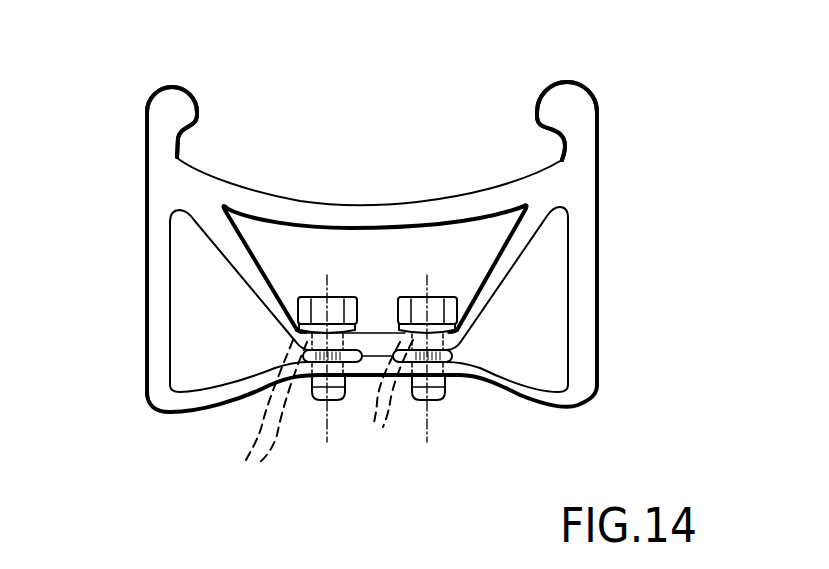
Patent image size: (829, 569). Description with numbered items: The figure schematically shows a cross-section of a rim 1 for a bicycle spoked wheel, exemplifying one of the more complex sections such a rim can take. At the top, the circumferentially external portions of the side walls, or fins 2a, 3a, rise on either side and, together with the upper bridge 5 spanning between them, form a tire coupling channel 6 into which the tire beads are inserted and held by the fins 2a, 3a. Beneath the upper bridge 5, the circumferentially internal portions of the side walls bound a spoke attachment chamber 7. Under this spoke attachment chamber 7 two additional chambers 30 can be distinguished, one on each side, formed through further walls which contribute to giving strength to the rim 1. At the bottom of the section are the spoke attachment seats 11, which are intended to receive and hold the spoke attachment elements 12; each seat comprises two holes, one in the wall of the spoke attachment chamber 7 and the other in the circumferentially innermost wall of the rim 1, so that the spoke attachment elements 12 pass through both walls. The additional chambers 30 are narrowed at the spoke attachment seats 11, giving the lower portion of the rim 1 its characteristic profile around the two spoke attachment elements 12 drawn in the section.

The rim 1 is at (708, 115).
The fin 2a is at (170, 108).
The fin 3a is at (567, 98).
The upper bridge 5 is at (478, 200).
The tire coupling channel 6 is at (380, 153).
The spoke attachment chamber 7 is at (302, 247).
The additional chambers 30 is at (203, 305).
The spoke attachment seats 11 is at (315, 423).
The spoke attachment elements 12 is at (327, 402).